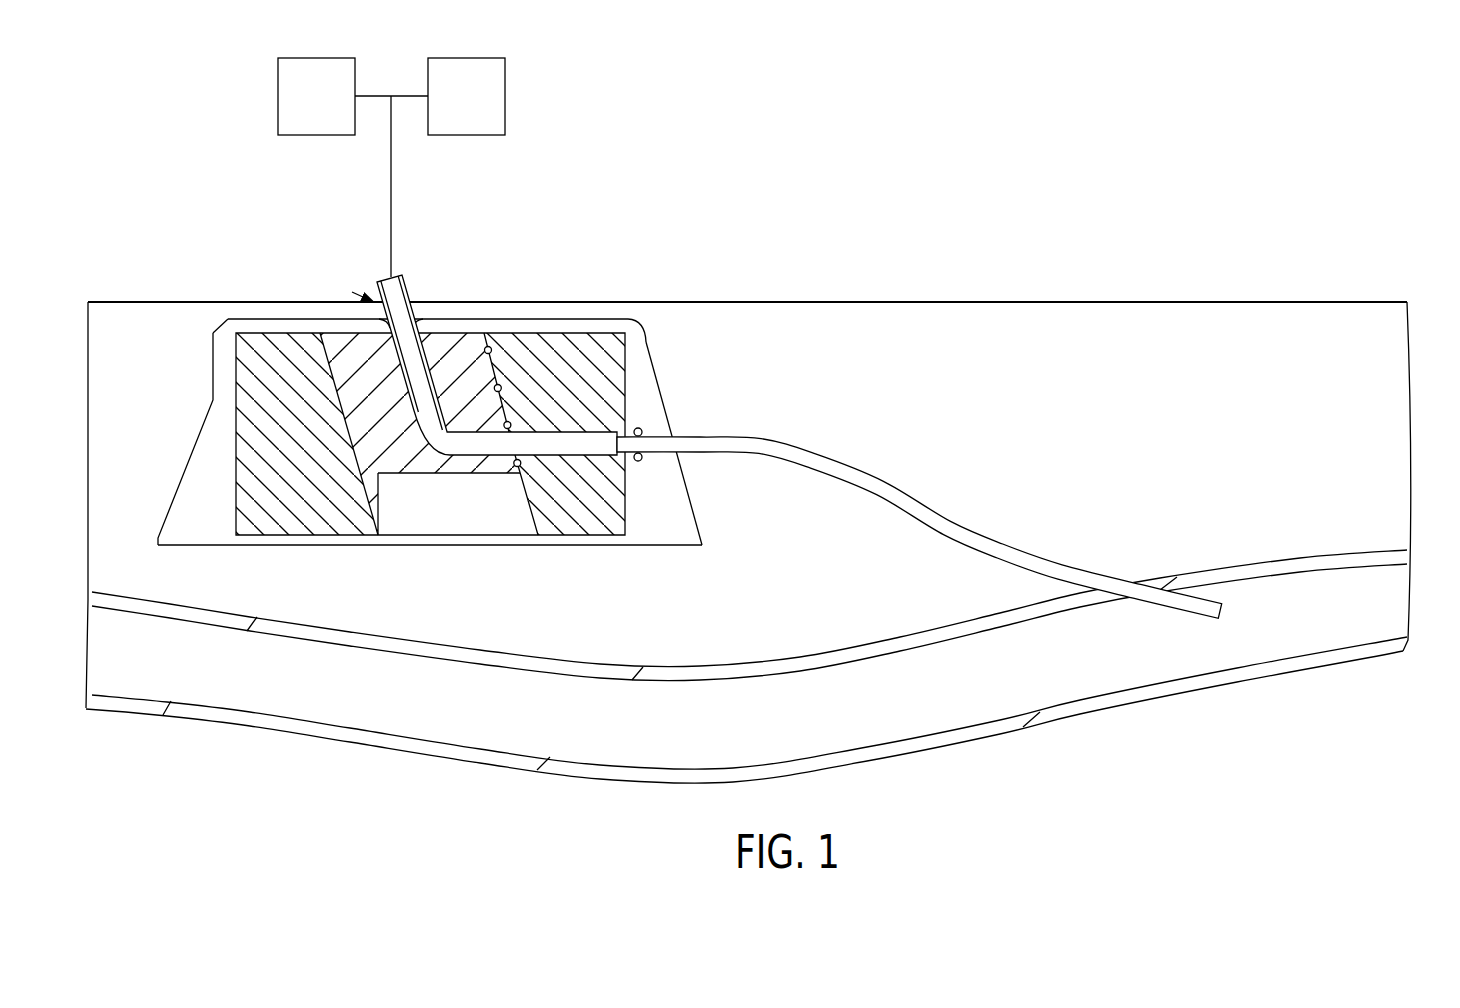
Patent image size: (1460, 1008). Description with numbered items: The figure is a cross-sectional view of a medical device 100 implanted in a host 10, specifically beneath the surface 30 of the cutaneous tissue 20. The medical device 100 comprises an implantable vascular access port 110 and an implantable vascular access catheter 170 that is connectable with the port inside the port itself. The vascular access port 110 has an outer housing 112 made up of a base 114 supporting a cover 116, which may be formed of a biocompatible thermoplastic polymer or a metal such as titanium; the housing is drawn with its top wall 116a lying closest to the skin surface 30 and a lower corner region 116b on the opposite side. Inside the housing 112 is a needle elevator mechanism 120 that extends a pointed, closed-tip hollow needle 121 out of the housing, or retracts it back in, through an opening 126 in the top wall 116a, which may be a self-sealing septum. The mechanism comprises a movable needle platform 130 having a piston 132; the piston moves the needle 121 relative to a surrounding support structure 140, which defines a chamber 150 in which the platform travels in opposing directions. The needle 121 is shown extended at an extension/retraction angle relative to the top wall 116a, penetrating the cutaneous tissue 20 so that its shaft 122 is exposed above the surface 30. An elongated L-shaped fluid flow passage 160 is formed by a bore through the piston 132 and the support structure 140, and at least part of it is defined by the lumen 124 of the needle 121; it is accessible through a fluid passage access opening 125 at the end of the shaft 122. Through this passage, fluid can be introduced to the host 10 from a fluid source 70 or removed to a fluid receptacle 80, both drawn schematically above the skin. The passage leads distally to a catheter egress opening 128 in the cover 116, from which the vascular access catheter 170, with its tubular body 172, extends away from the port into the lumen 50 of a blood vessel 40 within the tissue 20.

The host 10 is at (1263, 238).
The cutaneous tissue 20 is at (1385, 412).
The surface of cutaneous tissue 30 is at (1095, 299).
The blood vessel 40 is at (1238, 693).
The lumen of blood vessel 50 is at (1286, 578).
The fluid source 70 is at (278, 100).
The fluid receptacle 80 is at (505, 100).
The medical device 100 is at (800, 270).
The vascular access port 110 is at (594, 297).
The outer housing 112 is at (188, 388).
The base 114 is at (604, 538).
The cover 116 is at (168, 465).
The top wall of housing 116a is at (628, 324).
The lower corner of side wall 116b is at (686, 533).
The needle elevator mechanism 120 is at (238, 527).
The needle 121 is at (378, 405).
The shaft 122 is at (410, 300).
The needle lumen 124 is at (405, 279).
The fluid passage access opening 125 is at (395, 277).
The opening 126 is at (376, 335).
The catheter egress opening 128 is at (664, 455).
The needle platform 130 is at (376, 477).
The piston 132 is at (466, 383).
The support structure 140 is at (290, 347).
The chamber 150 is at (501, 520).
The fluid flow passage 160 is at (586, 441).
The vascular access catheter 170 is at (913, 490).
The cable 172 is at (768, 447).